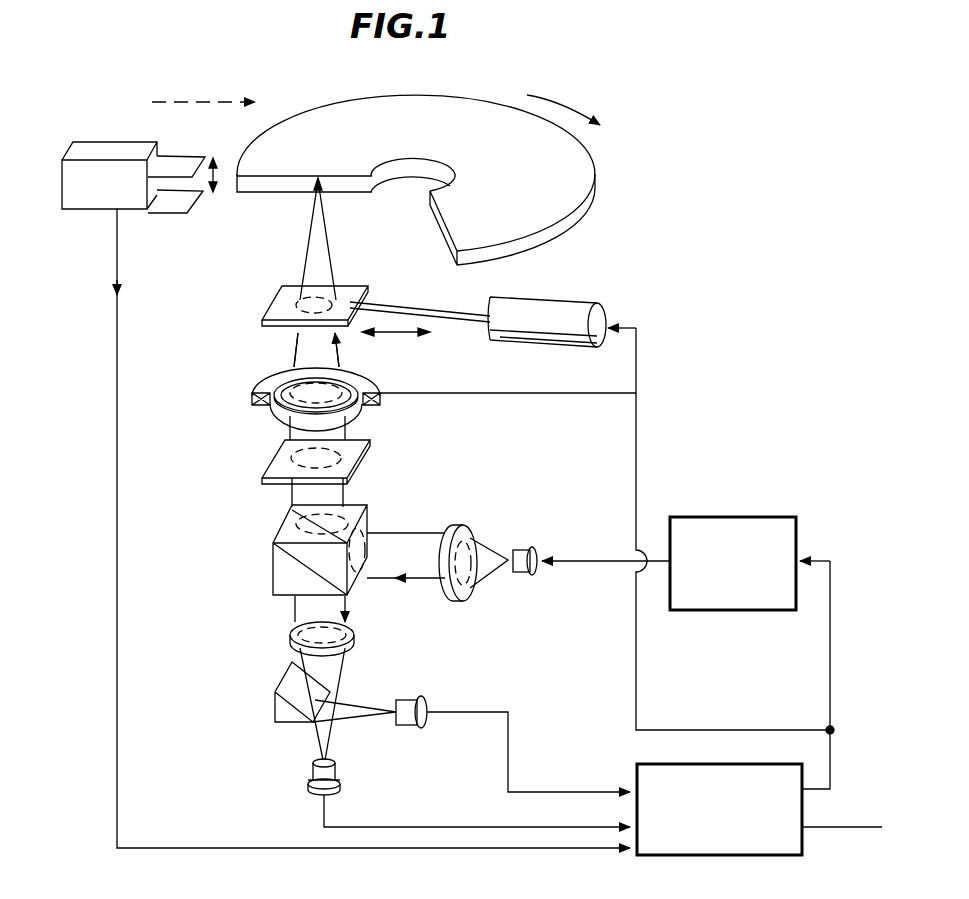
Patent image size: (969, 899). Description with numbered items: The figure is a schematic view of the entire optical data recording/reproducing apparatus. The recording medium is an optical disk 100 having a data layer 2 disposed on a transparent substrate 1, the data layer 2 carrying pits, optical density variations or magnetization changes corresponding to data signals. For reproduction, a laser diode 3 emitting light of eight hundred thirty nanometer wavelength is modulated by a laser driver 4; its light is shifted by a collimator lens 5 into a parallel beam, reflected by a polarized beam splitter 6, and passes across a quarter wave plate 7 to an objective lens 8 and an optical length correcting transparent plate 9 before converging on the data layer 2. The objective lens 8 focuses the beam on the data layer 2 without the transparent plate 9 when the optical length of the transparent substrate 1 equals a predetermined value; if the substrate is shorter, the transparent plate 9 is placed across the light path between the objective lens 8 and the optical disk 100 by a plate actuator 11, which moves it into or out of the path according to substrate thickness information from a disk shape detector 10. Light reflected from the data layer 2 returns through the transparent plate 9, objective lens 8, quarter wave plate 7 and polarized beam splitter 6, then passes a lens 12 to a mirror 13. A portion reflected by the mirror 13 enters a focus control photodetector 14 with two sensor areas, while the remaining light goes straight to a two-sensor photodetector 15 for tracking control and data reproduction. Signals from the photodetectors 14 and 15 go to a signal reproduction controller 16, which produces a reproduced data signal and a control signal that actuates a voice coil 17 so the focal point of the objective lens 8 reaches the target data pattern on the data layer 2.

The transparent substrate 1 is at (556, 230).
The data layer 2 is at (590, 198).
The laser diode 3 is at (528, 545).
The laser driver 4 is at (785, 525).
The collimator lens 5 is at (468, 528).
The polarized beam splitter 6 is at (358, 512).
The 1/4 wave plate 7 is at (362, 458).
The objective lens 8 is at (362, 404).
The transparent plate 9 is at (290, 300).
The disk shape detector 10 is at (120, 150).
The plate actuator 11 is at (585, 300).
The lens 12 is at (347, 645).
The mirror 13 is at (278, 712).
The focus control photodetector 14 is at (420, 700).
The two-sensor photodetector 15 is at (340, 775).
The signal reproduction controller 16 is at (804, 845).
The voice coil 17 is at (256, 398).
The optical disk 100 is at (583, 172).